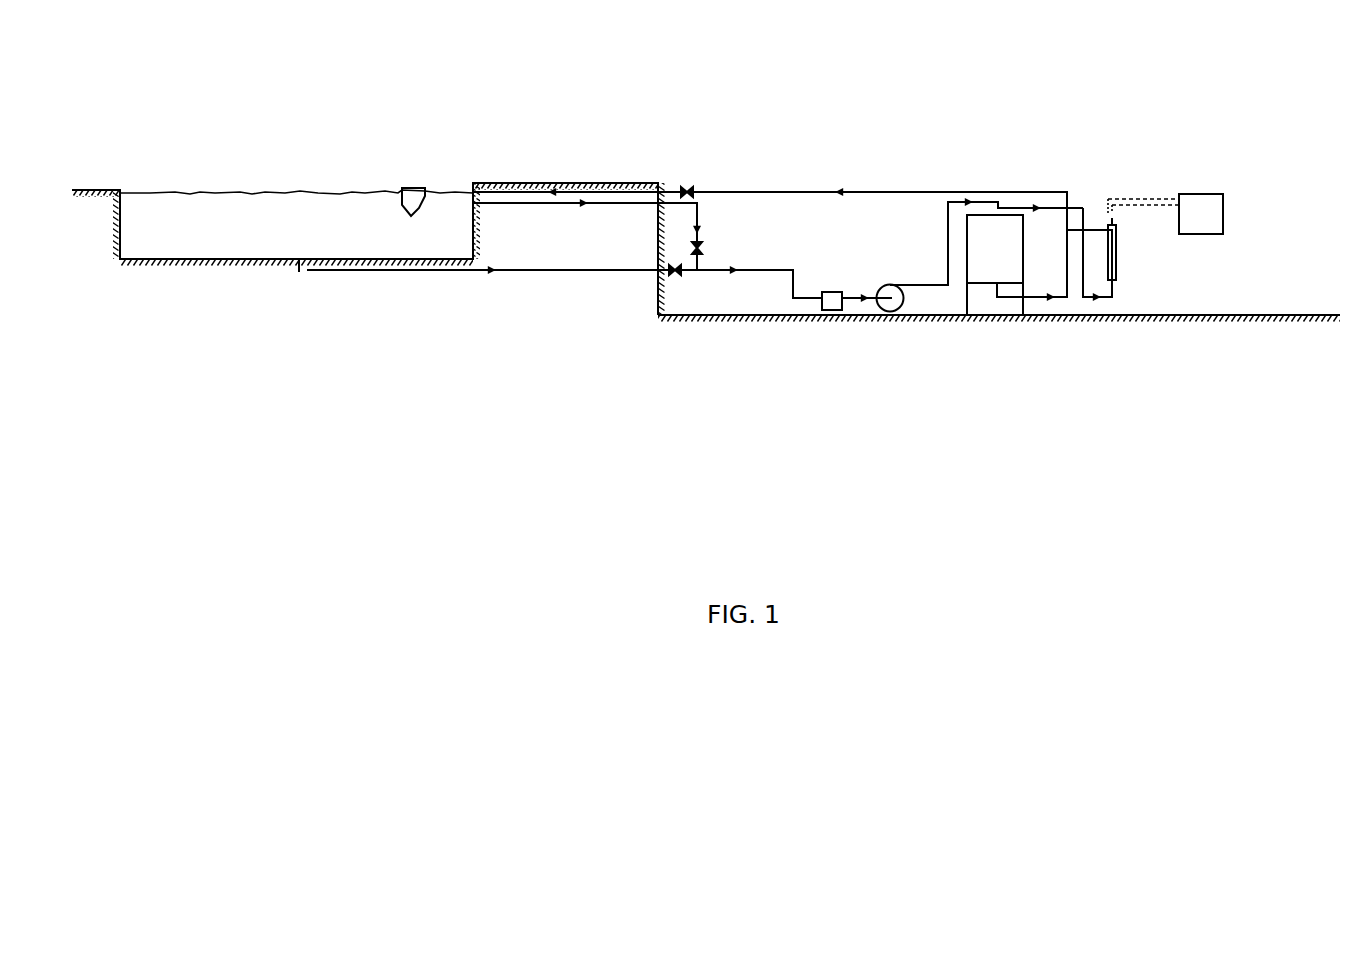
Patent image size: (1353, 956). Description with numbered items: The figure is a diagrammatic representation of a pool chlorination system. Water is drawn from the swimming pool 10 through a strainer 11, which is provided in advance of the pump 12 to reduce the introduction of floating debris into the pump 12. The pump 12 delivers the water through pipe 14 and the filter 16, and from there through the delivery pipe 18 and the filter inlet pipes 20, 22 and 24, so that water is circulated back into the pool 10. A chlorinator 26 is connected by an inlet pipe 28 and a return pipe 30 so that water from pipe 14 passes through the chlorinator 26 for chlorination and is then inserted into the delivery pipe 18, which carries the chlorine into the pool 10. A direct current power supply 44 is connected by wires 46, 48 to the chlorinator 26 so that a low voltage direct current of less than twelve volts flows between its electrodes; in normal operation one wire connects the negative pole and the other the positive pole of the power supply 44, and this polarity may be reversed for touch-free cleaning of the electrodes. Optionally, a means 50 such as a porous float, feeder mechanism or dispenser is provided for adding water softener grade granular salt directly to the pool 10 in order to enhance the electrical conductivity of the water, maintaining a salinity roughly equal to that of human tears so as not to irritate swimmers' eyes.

The swimming pool 10 is at (120, 222).
The salt-adding means 50 is at (413, 188).
The filter inlet pipe 20 is at (583, 272).
The filter inlet pipe 24 is at (773, 268).
The filter inlet pipe 22 is at (697, 215).
The delivery pipe 18 is at (1048, 191).
The strainer 11 is at (832, 314).
The pump 12 is at (902, 313).
The pipe 14 is at (937, 286).
The filter 16 is at (983, 285).
The return pipe 30 is at (1083, 230).
The inlet pipe 28 is at (1090, 296).
The chlorinator 26 is at (1118, 267).
The wire 48 is at (1172, 205).
The wire 46 is at (1140, 199).
The direct current power supply 44 is at (1215, 197).